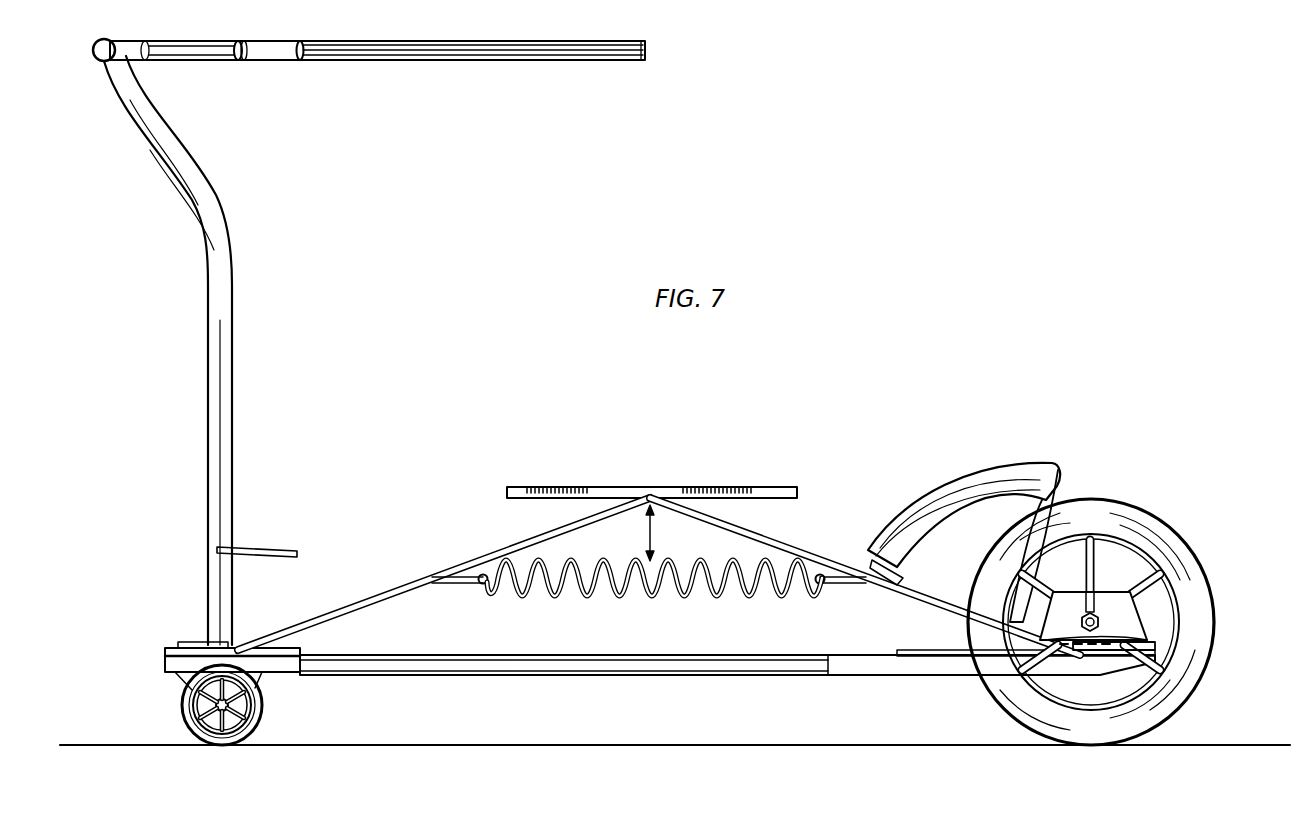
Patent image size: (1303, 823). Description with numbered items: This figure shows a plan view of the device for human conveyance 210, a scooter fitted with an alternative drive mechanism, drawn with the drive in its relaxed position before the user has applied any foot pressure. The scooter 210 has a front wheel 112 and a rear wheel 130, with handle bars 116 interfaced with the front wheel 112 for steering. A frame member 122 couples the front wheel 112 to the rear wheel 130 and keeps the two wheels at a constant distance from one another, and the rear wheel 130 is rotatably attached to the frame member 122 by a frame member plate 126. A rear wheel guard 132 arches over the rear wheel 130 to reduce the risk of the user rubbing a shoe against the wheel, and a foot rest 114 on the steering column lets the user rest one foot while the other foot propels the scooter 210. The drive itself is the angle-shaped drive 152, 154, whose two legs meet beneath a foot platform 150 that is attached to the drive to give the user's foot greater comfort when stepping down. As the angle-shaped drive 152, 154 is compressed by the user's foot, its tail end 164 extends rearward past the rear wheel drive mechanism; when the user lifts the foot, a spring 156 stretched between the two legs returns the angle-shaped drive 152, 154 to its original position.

The device for human conveyance 210 is at (873, 342).
The handle bars 116 is at (592, 62).
The foot rest 114 is at (268, 552).
The front wheel 112 is at (262, 716).
The frame member 122 is at (612, 676).
The foot platform 150 is at (632, 488).
The angle-shaped drive 152 is at (495, 558).
The angle-shaped drive 154 is at (768, 532).
The spring 156 is at (665, 600).
The rear wheel guard 132 is at (1017, 464).
The rear wheel 130 is at (1140, 508).
The frame member plate 126 is at (1130, 626).
The tail end 164 is at (1157, 657).